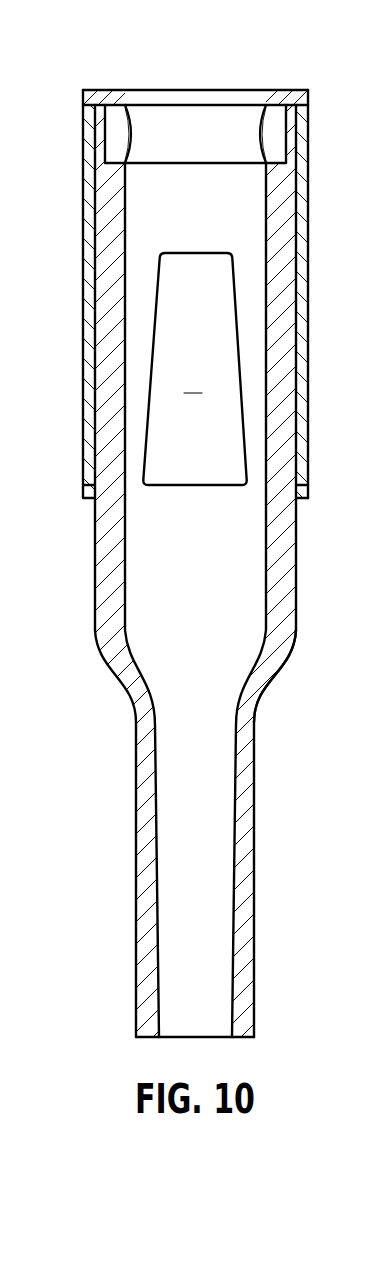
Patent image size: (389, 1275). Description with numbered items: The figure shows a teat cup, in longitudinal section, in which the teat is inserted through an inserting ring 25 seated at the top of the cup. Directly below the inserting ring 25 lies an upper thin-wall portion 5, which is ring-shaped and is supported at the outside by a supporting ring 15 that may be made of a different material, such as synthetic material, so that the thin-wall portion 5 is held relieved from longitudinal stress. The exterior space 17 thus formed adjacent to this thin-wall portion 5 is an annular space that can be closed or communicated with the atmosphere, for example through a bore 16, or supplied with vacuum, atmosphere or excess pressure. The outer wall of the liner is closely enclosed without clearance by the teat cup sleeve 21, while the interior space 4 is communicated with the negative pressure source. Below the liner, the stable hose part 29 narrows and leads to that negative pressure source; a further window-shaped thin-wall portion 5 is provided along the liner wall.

The interior space 4 is at (190, 628).
The thin-wall portion 5 is at (133, 132).
The supporting ring 15 is at (290, 118).
The bore 16 is at (305, 137).
The exterior space 17 is at (275, 123).
The teat cup sleeve 21 is at (308, 278).
The inserting ring 25 is at (107, 90).
The stable hose part 29 is at (287, 663).